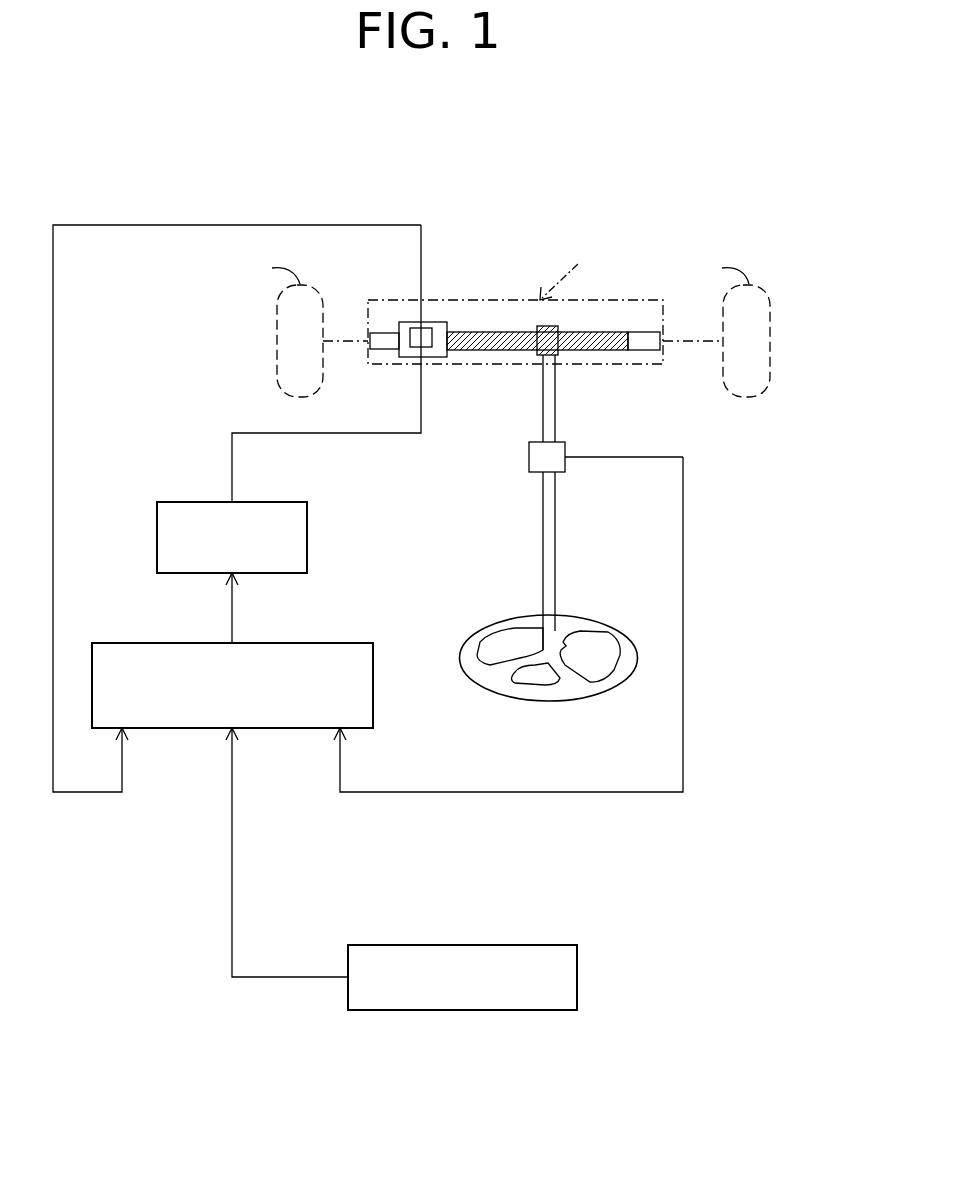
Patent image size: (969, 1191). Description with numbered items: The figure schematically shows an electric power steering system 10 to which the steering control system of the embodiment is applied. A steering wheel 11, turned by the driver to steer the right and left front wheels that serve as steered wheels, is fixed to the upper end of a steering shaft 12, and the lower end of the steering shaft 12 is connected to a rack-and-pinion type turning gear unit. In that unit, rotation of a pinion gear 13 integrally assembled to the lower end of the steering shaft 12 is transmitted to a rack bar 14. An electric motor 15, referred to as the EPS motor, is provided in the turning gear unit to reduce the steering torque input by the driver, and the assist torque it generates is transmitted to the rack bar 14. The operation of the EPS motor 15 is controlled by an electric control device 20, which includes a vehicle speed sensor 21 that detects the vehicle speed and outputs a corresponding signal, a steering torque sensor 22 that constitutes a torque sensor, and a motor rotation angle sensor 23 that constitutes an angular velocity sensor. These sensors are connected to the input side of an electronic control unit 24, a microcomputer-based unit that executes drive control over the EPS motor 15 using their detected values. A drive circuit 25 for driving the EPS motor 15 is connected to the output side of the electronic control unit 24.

The electric power steering system 10 is at (767, 462).
The steering wheel 11 is at (572, 693).
The steering shaft 12 is at (556, 560).
The pinion gear 13 is at (558, 352).
The rack bar 14 is at (578, 332).
The electric motor (EPS motor) 15 is at (433, 357).
The electric control device 20 is at (200, 454).
The vehicle speed sensor 21 is at (578, 977).
The steering torque sensor 22 is at (528, 457).
The motor rotation angle sensor 23 is at (424, 328).
The electronic control unit 24 is at (350, 644).
The drive circuit 25 is at (280, 502).